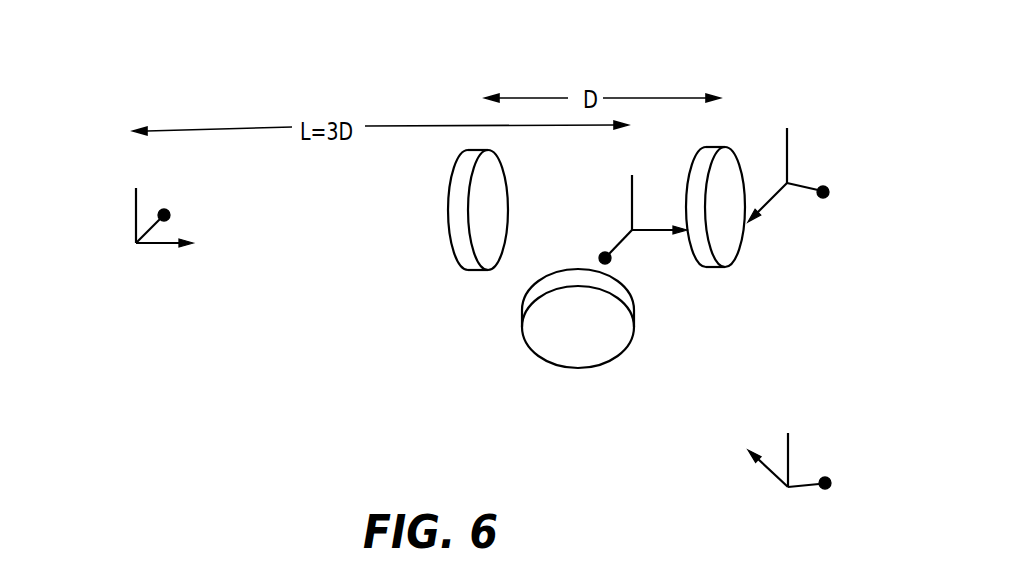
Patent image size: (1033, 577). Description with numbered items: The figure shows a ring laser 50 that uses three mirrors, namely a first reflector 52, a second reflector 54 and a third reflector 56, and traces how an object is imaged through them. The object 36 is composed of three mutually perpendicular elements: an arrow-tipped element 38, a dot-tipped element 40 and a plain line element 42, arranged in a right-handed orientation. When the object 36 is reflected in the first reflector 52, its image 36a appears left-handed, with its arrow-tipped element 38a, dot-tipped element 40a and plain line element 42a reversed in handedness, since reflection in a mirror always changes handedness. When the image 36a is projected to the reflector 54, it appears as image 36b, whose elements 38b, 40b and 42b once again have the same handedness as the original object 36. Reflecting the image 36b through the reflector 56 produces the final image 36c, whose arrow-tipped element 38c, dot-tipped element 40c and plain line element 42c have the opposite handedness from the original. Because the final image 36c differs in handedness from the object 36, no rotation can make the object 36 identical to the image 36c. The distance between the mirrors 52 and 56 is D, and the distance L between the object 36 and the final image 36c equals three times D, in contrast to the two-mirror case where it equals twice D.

The ring laser 50 is at (752, 23).
The first reflector 52 is at (725, 170).
The reflector 54 is at (595, 330).
The reflector 56 is at (450, 252).
The object 36 is at (622, 195).
The arrow-tipped element 38 is at (652, 228).
The dot-tipped element 40 is at (611, 248).
The plain line element 42 is at (631, 188).
The image 36a is at (811, 152).
The arrow-tipped element of image 38a is at (773, 202).
The dot-tipped element of image 40a is at (804, 184).
The plain line element of image 42a is at (789, 155).
The image 36b is at (790, 438).
The arrow-tipped element of image 38b is at (772, 475).
The dot-tipped element of image 40b is at (817, 478).
The plain line element of image 42b is at (792, 457).
The final image 36c is at (164, 225).
The arrow-tipped element of final image 38c is at (162, 246).
The dot-tipped element of final image 40c is at (171, 213).
The plain line element of final image 42c is at (134, 212).